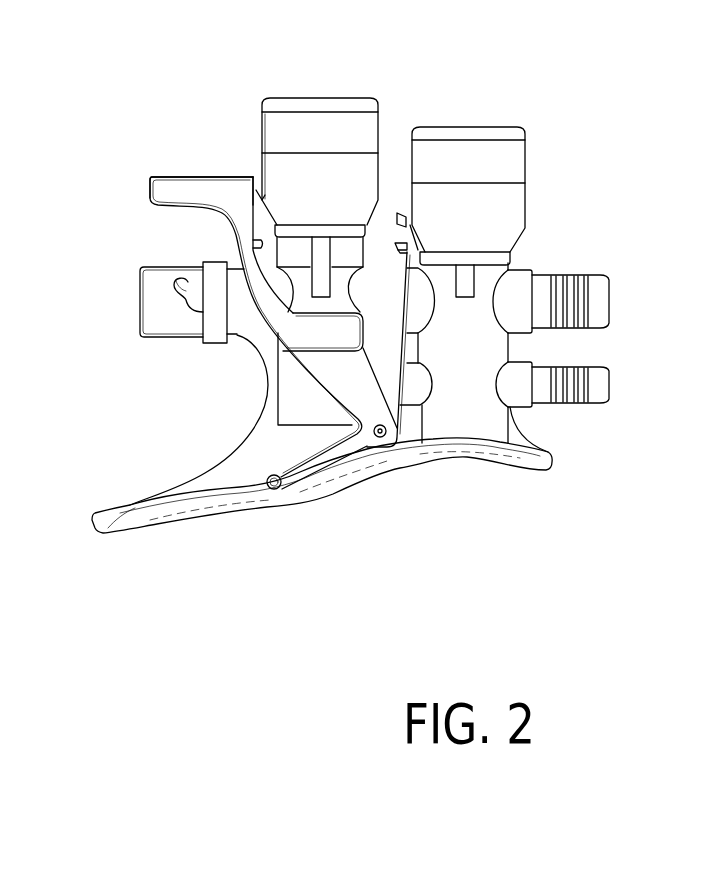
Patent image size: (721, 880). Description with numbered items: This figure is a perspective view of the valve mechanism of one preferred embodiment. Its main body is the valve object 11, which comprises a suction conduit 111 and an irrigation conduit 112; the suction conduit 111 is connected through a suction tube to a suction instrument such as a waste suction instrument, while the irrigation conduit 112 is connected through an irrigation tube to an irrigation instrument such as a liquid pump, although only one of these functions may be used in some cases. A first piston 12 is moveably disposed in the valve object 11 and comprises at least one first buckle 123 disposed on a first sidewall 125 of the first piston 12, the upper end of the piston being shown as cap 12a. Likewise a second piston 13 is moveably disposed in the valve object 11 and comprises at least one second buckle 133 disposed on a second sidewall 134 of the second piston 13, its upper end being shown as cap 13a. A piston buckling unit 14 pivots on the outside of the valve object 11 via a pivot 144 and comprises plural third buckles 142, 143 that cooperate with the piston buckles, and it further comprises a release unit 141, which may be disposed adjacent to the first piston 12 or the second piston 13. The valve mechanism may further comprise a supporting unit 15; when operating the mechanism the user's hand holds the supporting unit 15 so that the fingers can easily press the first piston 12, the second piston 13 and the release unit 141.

The valve object 11 is at (549, 241).
The suction conduit 111 is at (606, 301).
The irrigation conduit 112 is at (605, 387).
The first piston 12 is at (488, 147).
The cap of second knob 12a is at (506, 125).
The first buckle 123 is at (403, 229).
The first sidewall 125 is at (398, 241).
The second piston 13 is at (313, 110).
The cap of first knob 13a is at (352, 97).
The second buckle 133 is at (257, 186).
The second sidewall 134 is at (261, 200).
The piston buckling unit 14 is at (152, 150).
The release unit 141 is at (180, 188).
The third buckle 142 is at (254, 244).
The third buckle 143 is at (399, 215).
The pivot 144 is at (379, 439).
The supporting unit 15 is at (488, 457).